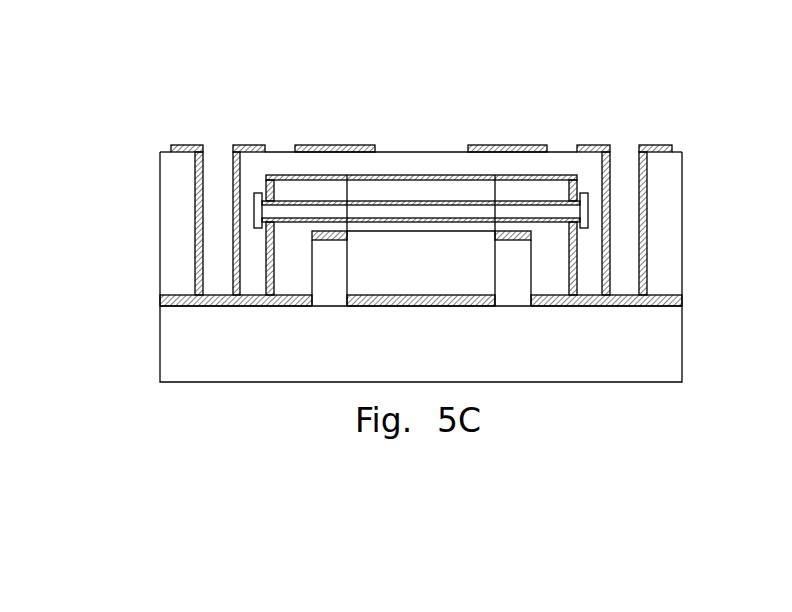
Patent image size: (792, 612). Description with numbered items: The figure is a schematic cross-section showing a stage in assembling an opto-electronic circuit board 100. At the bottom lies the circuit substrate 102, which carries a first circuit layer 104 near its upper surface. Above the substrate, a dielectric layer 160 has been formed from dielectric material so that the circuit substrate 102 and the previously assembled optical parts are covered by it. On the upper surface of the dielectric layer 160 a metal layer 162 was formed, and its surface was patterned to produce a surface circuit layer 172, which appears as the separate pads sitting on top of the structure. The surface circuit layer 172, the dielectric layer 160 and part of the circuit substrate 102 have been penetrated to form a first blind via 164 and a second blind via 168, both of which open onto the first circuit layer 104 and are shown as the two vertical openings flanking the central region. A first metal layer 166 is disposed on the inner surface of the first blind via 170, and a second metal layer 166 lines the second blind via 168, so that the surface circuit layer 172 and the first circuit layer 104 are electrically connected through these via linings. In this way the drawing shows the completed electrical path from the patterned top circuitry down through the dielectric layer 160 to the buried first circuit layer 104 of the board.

The opto-electronic circuit board 100 is at (192, 101).
The circuit substrate 102 is at (670, 342).
The first circuit layer 104 is at (680, 298).
The dielectric layer 160 is at (170, 170).
The metal layer 162 is at (593, 90).
The first blind via 164 is at (218, 130).
The first metal layer 166 is at (197, 243).
The second blind via 168 is at (623, 130).
The first blind via 170 is at (647, 190).
The surface circuit layer 172 is at (365, 146).